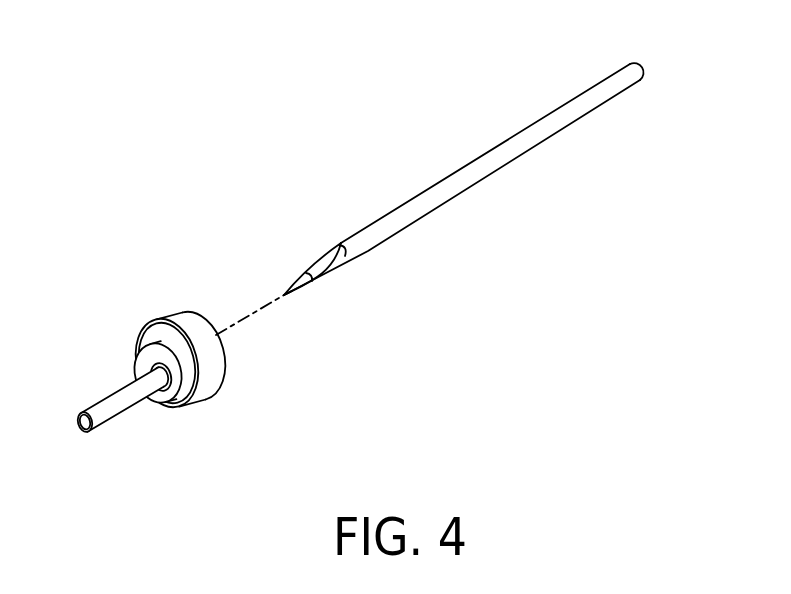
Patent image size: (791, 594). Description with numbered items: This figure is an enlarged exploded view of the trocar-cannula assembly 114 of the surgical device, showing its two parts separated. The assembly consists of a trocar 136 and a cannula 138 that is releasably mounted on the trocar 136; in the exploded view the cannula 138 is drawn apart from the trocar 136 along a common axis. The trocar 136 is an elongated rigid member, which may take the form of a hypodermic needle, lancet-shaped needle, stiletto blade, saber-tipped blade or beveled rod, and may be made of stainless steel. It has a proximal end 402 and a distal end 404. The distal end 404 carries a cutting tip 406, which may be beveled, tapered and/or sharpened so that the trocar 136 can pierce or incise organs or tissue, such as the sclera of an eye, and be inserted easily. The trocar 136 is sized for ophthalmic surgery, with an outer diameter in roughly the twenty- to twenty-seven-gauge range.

The trocar-cannula assembly 114 is at (258, 124).
The trocar 136 is at (420, 175).
The cannula 138 is at (148, 312).
The proximal end 402 is at (631, 63).
The distal end 404 is at (284, 294).
The cutting tip 406 is at (286, 297).